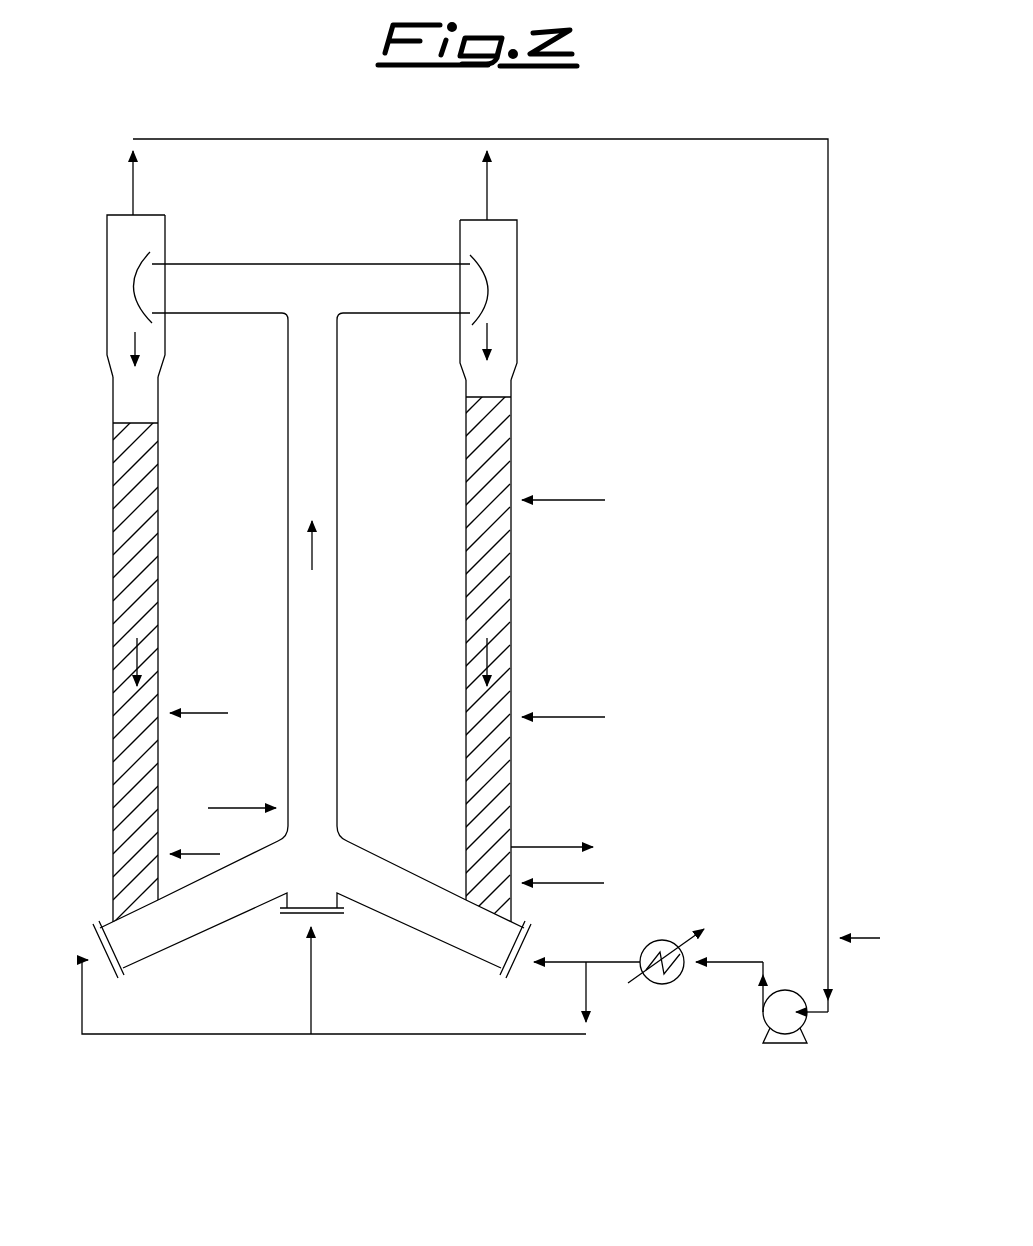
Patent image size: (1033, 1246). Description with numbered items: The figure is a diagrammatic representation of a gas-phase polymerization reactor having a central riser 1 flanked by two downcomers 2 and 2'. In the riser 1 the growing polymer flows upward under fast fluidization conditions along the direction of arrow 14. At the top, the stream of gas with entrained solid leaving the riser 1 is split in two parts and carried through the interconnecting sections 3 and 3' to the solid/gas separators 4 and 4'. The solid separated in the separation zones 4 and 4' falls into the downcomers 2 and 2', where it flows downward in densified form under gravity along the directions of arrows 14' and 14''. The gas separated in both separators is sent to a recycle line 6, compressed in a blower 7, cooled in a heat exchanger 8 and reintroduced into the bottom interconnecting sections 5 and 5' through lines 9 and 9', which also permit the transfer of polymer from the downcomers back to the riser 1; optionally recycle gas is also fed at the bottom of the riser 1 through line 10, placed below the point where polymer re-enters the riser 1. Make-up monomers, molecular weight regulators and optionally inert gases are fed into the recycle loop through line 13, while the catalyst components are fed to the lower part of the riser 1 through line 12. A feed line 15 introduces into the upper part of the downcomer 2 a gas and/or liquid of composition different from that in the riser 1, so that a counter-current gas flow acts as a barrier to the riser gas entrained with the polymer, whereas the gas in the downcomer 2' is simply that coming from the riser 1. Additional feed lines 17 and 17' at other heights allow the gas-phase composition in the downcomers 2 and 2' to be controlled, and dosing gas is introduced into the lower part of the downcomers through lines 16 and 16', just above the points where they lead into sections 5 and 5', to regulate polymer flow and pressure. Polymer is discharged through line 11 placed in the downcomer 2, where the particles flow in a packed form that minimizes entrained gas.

The riser 1 is at (337, 607).
The downcomer 2 is at (515, 679).
The downcomer 2' is at (109, 673).
The interconnecting section 3 is at (391, 264).
The interconnecting section 3' is at (232, 260).
The solid/gas separator 4 is at (512, 265).
The solid/gas separator 4' is at (111, 264).
The interconnecting section 5 is at (434, 935).
The interconnecting section 5' is at (190, 935).
The recycle line 6 is at (828, 383).
The blower 7 is at (785, 988).
The heat exchanger 8 is at (660, 987).
The line 9 is at (587, 938).
The line 9' is at (329, 1015).
The line 10 is at (312, 977).
The line 11 is at (552, 847).
The line 12 is at (255, 807).
The line 13 is at (880, 938).
The arrow 14 is at (355, 541).
The arrow 14' is at (535, 640).
The arrow 14'' is at (97, 650).
The feed line 15 is at (565, 500).
The line 16 is at (590, 870).
The line 16' is at (215, 834).
The feed line 17 is at (574, 684).
The feed line 17' is at (209, 679).